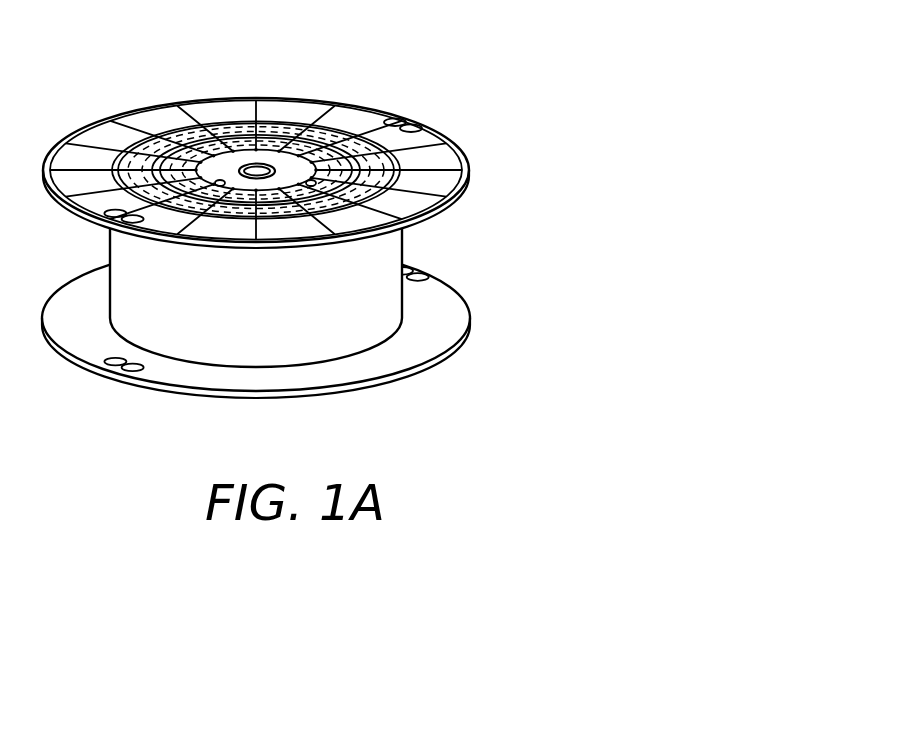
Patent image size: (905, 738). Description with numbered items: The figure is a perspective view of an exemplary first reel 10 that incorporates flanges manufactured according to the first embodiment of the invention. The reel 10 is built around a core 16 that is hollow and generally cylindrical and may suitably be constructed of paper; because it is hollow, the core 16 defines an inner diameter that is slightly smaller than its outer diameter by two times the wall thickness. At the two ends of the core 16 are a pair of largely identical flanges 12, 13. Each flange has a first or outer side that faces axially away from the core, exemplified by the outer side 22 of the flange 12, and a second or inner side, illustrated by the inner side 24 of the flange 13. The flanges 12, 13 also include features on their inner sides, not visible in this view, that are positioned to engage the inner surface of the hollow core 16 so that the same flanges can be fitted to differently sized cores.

The reel 10 is at (551, 72).
The flange 12 is at (471, 181).
The outer side 22 is at (296, 108).
The core 16 is at (403, 245).
The flange 13 is at (449, 357).
The inner side 24 is at (434, 313).